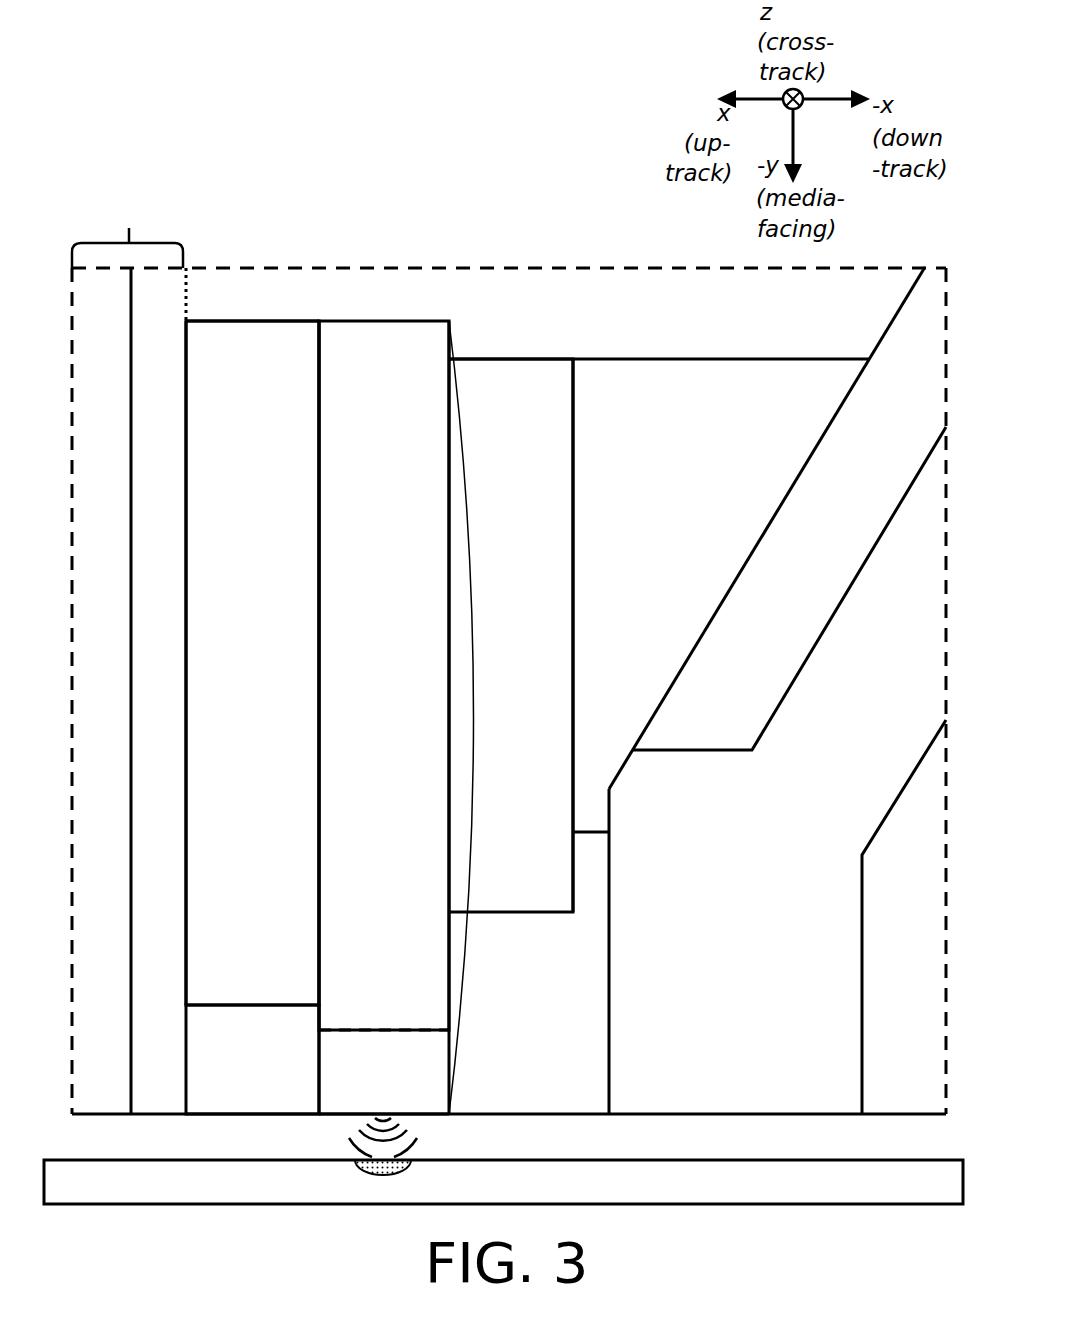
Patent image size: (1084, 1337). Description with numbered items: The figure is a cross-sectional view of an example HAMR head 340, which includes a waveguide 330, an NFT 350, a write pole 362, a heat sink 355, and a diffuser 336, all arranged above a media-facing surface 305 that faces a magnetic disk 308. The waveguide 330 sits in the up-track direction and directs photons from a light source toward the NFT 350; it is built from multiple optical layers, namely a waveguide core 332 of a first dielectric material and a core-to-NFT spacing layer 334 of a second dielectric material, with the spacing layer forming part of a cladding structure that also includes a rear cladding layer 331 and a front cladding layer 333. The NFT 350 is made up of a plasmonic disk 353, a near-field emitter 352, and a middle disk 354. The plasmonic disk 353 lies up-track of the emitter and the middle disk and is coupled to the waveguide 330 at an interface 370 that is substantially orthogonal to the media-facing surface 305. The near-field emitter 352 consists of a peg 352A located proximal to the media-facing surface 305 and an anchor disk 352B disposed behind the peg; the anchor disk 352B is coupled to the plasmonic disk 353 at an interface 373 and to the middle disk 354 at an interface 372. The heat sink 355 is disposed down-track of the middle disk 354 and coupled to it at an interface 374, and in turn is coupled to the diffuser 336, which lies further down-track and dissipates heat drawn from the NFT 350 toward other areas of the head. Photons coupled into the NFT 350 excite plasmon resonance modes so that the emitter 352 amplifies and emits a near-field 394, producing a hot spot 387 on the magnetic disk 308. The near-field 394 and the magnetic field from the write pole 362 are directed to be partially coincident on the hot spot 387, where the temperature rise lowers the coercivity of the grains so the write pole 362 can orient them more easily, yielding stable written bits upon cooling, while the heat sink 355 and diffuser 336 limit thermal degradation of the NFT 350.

The media-facing surface 305 is at (205, 1116).
The magnetic disk 308 is at (110, 1201).
The waveguide 330 is at (127, 231).
The rear cladding layer 331 is at (275, 309).
The waveguide core 332 is at (123, 706).
The front cladding layer 333 is at (275, 1077).
The core-to-NFT spacing layer 334 is at (182, 706).
The diffuser 336 is at (743, 727).
The HAMR head 340 is at (429, 117).
The NFT 350 is at (481, 293).
The near-field emitter 352 is at (474, 718).
The peg 352A is at (417, 1089).
The anchor disk 352B is at (417, 632).
The plasmonic disk 353 is at (273, 678).
The middle disk 354 is at (534, 632).
The heat sink 355 is at (691, 544).
The write pole 362 is at (758, 1001).
The interface 370 is at (188, 440).
The interface 372 is at (449, 321).
The interface 373 is at (319, 321).
The interface 374 is at (573, 360).
The hot spot 387 is at (400, 1168).
The near-field 394 is at (356, 1137).